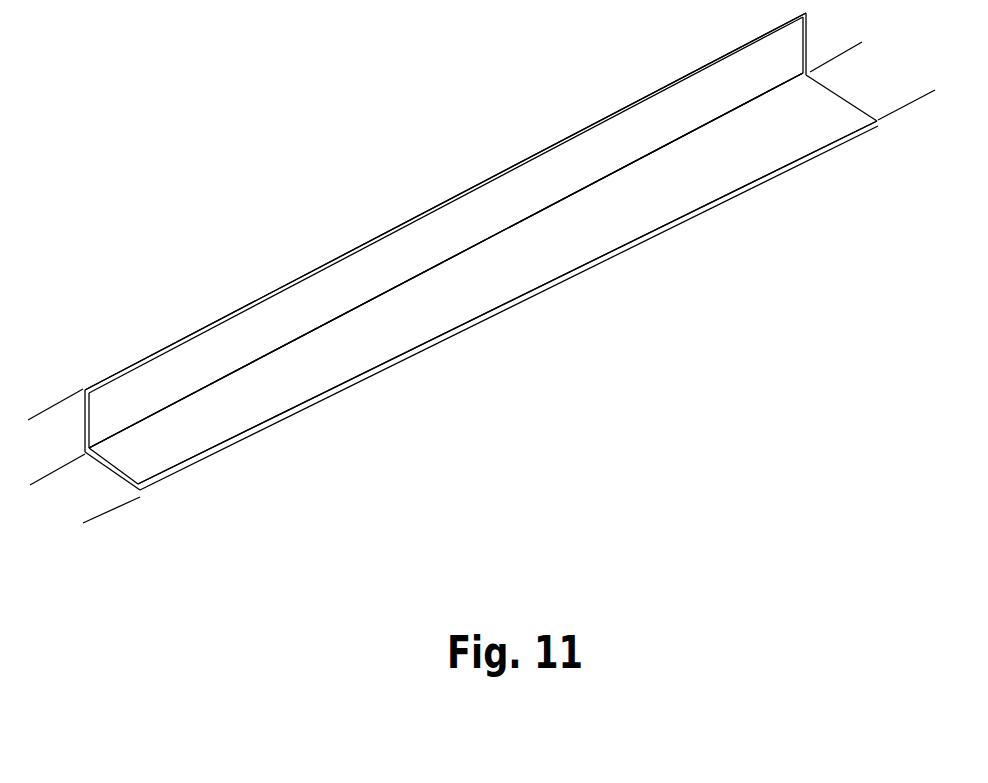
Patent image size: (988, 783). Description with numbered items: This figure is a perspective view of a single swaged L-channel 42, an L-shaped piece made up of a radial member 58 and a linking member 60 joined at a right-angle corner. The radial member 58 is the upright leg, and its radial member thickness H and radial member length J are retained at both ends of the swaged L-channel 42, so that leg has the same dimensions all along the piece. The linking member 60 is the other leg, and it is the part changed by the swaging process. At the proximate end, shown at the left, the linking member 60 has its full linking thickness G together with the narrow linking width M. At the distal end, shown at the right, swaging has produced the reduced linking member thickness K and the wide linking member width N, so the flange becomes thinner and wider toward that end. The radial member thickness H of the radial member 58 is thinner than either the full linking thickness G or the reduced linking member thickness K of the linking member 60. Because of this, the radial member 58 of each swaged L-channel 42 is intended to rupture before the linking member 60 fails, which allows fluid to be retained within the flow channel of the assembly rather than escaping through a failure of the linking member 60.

The swaged L-channel 42 is at (441, 150).
The radial member 58 is at (527, 185).
The linking member 60 is at (438, 313).
The radial member length J is at (45, 422).
The narrow linking width M is at (80, 511).
The full linking thickness G is at (163, 430).
The wide linking member width N is at (858, 60).
The reduced linking member thickness K is at (845, 108).
The radial member thickness H is at (327, 300).